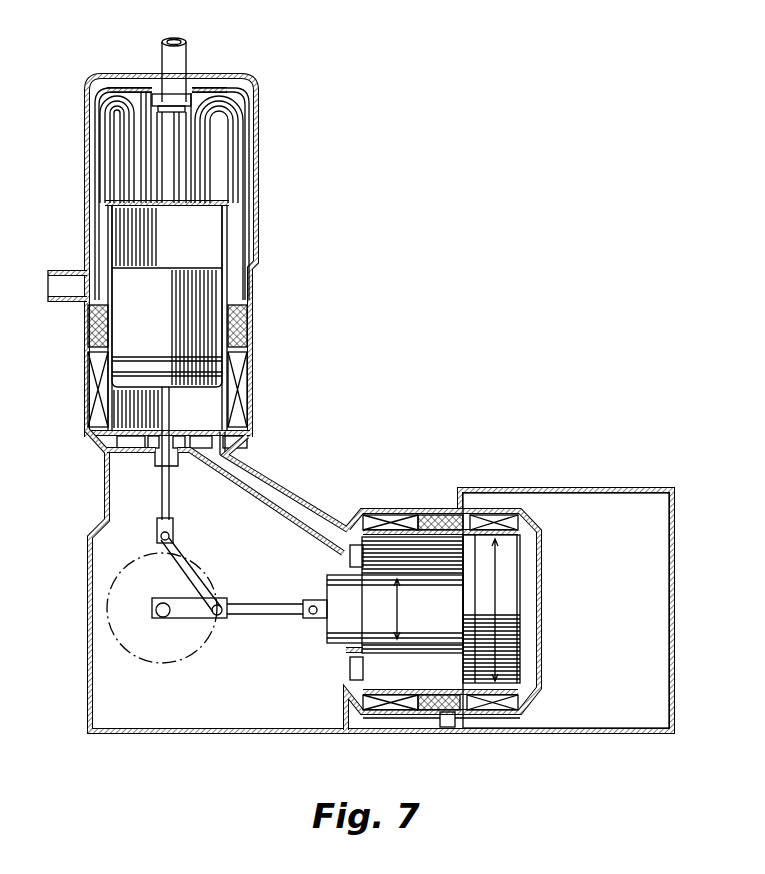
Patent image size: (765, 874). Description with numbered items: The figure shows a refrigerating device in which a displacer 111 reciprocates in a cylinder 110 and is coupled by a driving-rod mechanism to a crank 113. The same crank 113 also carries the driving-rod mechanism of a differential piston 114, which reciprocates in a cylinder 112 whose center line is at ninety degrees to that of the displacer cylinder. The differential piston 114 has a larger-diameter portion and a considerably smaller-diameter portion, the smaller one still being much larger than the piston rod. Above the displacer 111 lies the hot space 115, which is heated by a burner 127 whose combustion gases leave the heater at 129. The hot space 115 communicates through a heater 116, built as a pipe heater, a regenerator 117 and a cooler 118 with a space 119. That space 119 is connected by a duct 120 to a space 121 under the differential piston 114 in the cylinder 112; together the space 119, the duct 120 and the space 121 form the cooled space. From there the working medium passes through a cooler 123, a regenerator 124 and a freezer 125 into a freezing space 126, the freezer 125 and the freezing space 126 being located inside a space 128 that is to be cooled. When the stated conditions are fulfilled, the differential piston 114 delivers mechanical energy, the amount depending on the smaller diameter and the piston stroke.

The burner 127 is at (161, 48).
The heater 116 is at (98, 133).
The space 115 is at (108, 210).
The combustion gas outlet 129 is at (65, 280).
The regenerator 117 is at (88, 327).
The displacer 111 is at (117, 365).
The space 119 is at (120, 407).
The cylinder 110 is at (112, 412).
The cooler 118 is at (92, 428).
The crank 113 is at (177, 620).
The duct 120 is at (283, 487).
The cylinder 112 is at (410, 530).
The space 121 is at (377, 682).
The cooler 123 is at (390, 706).
The regenerator 124 is at (440, 706).
The freezer 125 is at (490, 706).
The differential piston 114 is at (536, 690).
The freezing space 126 is at (540, 687).
The space to be cooled 128 is at (632, 698).